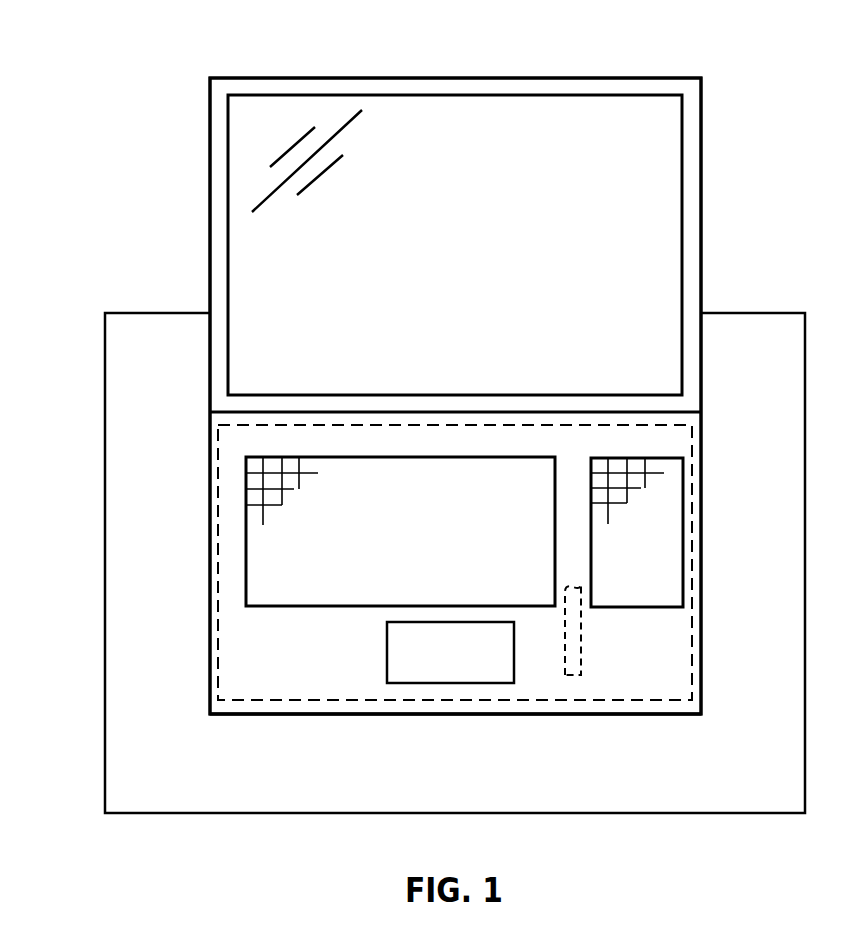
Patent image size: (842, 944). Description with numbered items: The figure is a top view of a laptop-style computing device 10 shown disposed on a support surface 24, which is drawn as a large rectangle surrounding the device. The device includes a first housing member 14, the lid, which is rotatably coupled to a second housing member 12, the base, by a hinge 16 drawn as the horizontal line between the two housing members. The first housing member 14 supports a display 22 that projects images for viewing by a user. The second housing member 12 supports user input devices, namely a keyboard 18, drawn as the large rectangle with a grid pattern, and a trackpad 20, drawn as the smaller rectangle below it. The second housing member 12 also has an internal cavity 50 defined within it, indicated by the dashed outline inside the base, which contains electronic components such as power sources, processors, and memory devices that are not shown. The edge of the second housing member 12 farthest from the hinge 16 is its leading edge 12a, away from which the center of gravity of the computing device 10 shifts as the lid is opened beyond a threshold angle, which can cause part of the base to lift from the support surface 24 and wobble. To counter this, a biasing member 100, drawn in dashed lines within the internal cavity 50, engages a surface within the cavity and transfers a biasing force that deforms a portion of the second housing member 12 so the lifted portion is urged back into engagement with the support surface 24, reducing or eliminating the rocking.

The computing device 10 is at (148, 56).
The second housing member 12 is at (210, 478).
The leading edge 12a is at (370, 722).
The first housing member 14 is at (338, 78).
The hinge 16 is at (225, 410).
The keyboard 18 is at (312, 606).
The trackpad 20 is at (387, 642).
The display 22 is at (228, 182).
The support surface 24 is at (115, 378).
The internal cavity 50 is at (676, 440).
The biasing member 100 is at (565, 687).